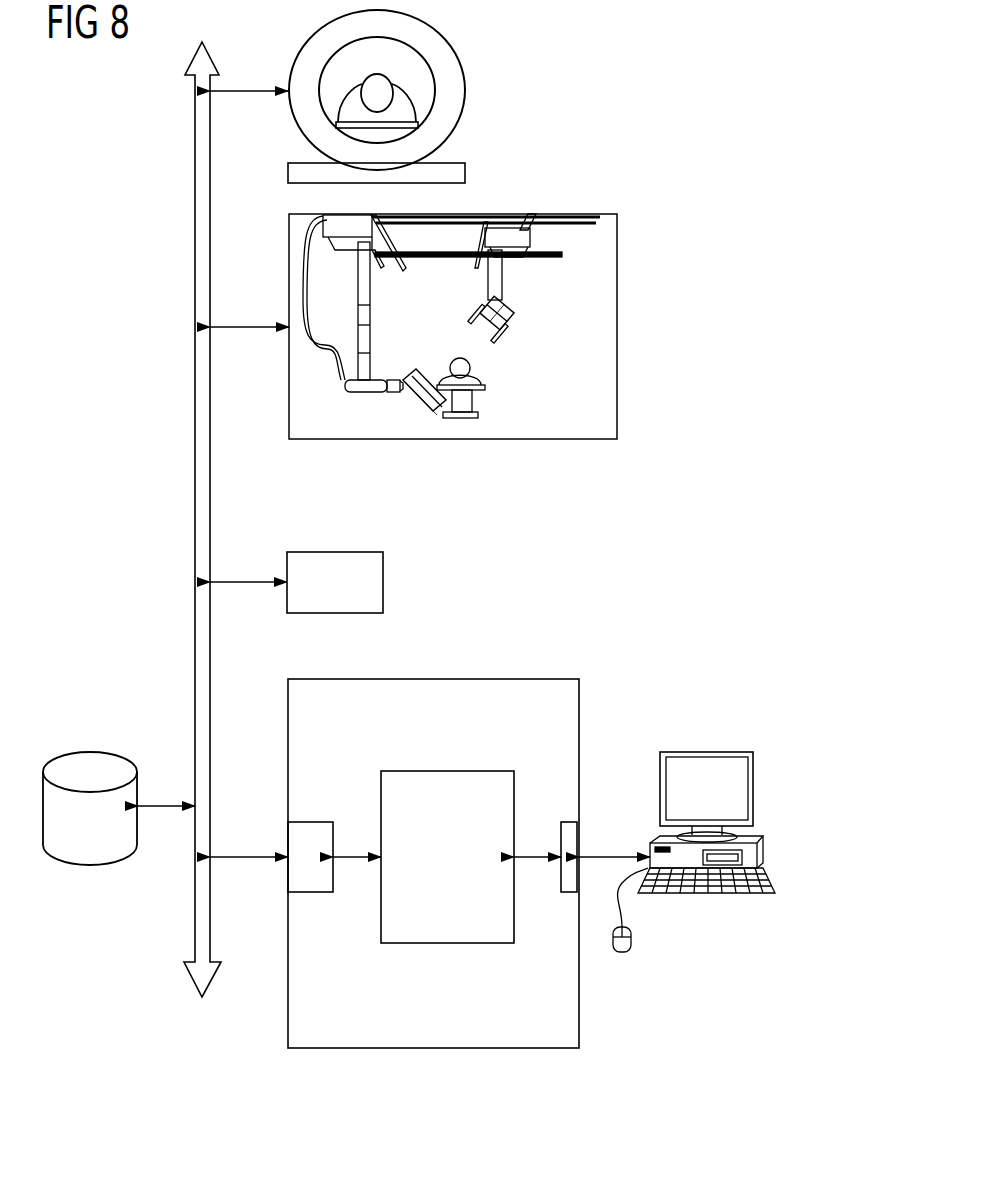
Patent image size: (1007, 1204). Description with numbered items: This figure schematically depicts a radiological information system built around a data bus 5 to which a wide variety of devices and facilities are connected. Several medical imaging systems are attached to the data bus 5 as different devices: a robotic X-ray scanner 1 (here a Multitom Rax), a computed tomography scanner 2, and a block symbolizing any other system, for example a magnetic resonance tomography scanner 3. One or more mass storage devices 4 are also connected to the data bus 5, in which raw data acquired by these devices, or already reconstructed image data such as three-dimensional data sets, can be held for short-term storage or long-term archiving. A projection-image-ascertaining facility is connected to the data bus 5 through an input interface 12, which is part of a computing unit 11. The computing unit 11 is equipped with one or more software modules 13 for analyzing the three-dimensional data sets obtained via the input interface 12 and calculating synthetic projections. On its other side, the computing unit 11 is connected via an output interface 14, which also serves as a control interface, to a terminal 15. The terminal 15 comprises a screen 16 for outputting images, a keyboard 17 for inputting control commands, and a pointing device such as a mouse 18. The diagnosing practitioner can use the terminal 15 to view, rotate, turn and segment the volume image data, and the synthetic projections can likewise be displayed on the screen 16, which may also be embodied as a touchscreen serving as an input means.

The robotic X-ray scanner 1 is at (515, 305).
The computed tomography scanner 2 is at (465, 90).
The magnetic resonance tomography scanner 3 is at (383, 582).
The mass storage device 4 is at (90, 752).
The data bus 5 is at (195, 462).
The computing unit 11 is at (542, 679).
The input interface 12 is at (315, 822).
The software module 13 is at (447, 771).
The output interface 14 is at (560, 822).
The terminal 15 is at (705, 811).
The screen 16 is at (753, 787).
The keyboard 17 is at (775, 878).
The mouse 18 is at (631, 938).